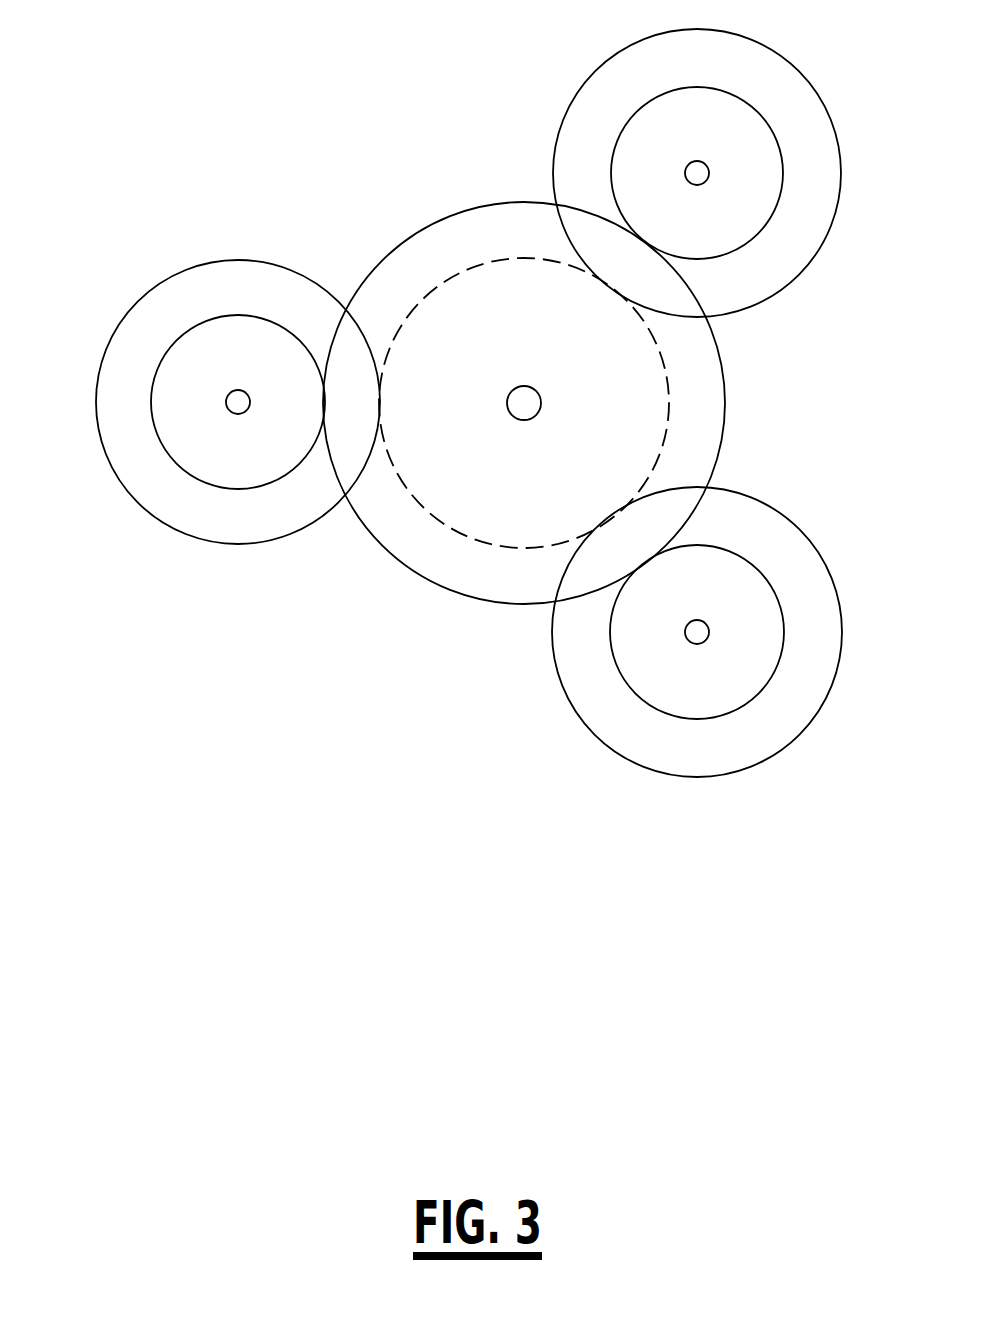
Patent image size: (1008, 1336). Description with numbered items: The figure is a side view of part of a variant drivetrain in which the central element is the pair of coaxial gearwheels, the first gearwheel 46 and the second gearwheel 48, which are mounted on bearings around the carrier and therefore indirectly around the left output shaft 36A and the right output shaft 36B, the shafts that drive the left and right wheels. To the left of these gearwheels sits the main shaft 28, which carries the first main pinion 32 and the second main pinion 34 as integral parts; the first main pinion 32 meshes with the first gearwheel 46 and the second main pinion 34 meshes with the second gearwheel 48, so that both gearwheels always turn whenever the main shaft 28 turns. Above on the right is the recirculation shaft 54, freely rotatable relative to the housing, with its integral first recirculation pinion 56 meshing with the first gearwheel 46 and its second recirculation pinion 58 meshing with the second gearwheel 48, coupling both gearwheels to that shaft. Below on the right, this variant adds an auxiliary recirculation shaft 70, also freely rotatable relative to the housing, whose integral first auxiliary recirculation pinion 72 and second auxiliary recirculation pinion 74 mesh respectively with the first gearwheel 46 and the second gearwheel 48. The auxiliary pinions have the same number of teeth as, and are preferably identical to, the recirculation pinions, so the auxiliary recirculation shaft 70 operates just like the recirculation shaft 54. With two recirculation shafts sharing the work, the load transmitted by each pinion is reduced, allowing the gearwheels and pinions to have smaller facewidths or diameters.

The main shaft 28 is at (226, 402).
The first main pinion 32 is at (181, 270).
The second main pinion 34 is at (180, 472).
The left output shaft 36A is at (692, 410).
The right output shaft 36B is at (541, 396).
The first gearwheel 46 is at (410, 494).
The second gearwheel 48 is at (421, 228).
The recirculation shaft 54 is at (700, 185).
The first recirculation pinion 56 is at (598, 65).
The second recirculation pinion 58 is at (760, 113).
The auxiliary recirculation shaft 70 is at (703, 645).
The first auxiliary recirculation pinion 72 is at (800, 533).
The second auxiliary recirculation pinion 74 is at (650, 705).